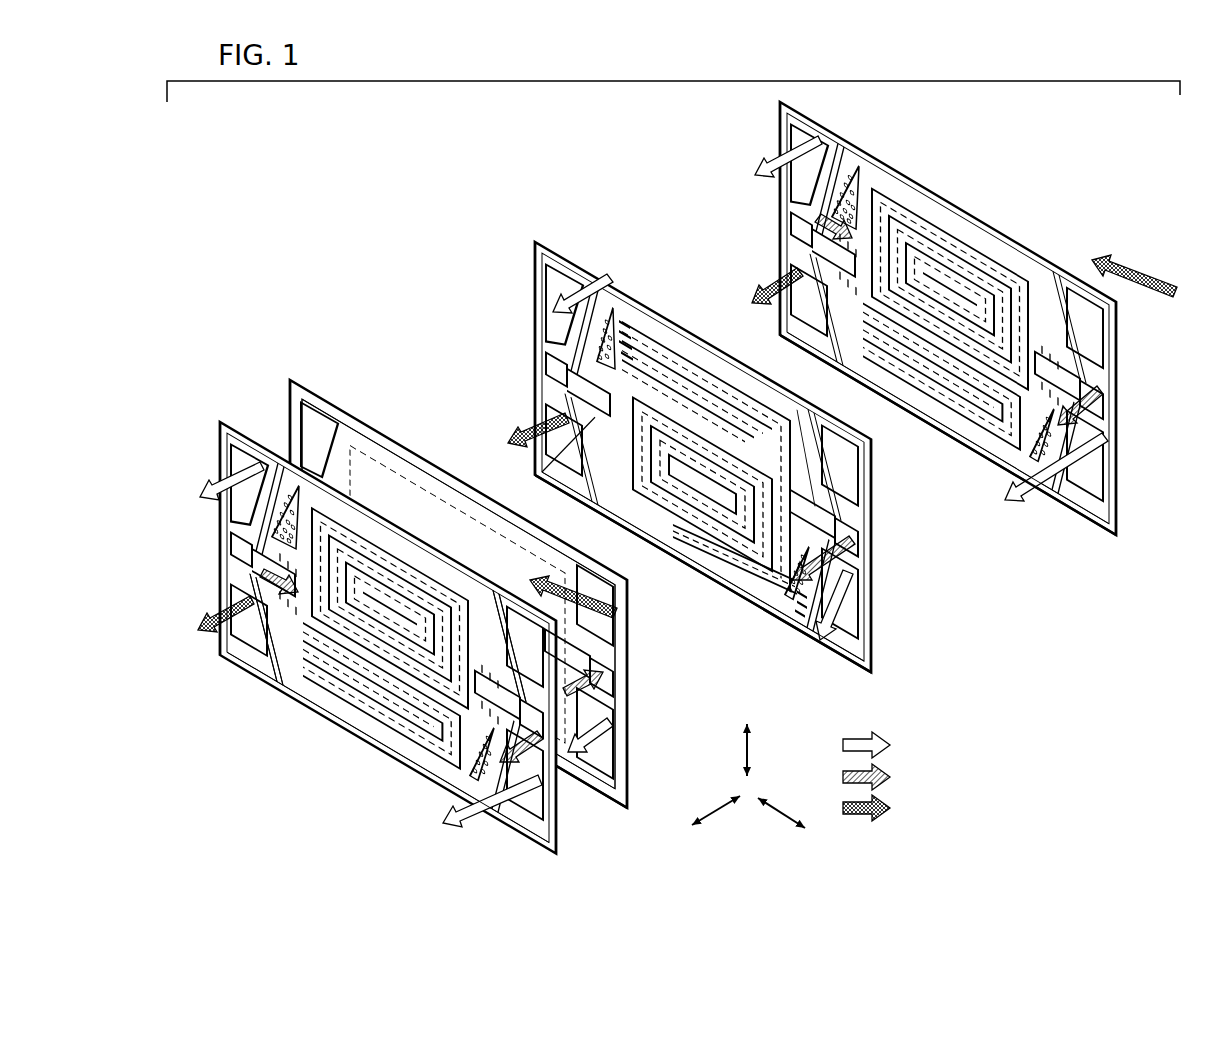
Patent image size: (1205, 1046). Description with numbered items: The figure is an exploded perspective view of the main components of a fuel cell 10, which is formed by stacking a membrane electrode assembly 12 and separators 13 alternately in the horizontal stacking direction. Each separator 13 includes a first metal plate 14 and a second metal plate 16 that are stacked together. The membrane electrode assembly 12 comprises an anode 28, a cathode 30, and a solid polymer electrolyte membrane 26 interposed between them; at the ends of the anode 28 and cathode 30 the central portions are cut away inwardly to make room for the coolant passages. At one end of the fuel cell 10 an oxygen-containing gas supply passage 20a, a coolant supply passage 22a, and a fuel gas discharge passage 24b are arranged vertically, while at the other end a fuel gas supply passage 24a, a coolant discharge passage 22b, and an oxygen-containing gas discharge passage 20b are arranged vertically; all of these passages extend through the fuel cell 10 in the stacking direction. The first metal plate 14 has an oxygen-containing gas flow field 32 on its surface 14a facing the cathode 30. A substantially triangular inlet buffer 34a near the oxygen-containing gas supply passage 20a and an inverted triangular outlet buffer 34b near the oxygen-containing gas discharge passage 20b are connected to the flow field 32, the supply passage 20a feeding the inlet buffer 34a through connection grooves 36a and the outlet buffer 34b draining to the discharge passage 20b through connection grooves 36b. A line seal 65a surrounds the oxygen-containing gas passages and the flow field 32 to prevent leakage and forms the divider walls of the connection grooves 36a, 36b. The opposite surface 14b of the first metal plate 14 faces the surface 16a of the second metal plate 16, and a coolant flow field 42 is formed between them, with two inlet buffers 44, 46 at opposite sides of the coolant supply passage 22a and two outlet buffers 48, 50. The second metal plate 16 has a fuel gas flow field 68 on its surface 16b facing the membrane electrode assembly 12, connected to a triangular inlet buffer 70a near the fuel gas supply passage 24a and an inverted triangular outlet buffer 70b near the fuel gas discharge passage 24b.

The fuel cell 10 is at (358, 240).
The membrane electrode assembly 12 is at (289, 379).
The separator 13 is at (736, 154).
The first metal plate 14 is at (649, 300).
The surface of the first metal plate 14a is at (803, 636).
The surface of the first metal plate 14b is at (867, 677).
The second metal plate 16 is at (217, 418).
The surface of the second metal plate 16a is at (272, 690).
The surface of the second metal plate 16b is at (1097, 530).
The oxygen-containing gas supply passage 20a is at (243, 462).
The oxygen-containing gas discharge passage 20b is at (540, 803).
The coolant supply passage 22a is at (242, 546).
The coolant discharge passage 22b is at (542, 721).
The fuel gas supply passage 24a is at (537, 656).
The fuel gas discharge passage 24b is at (242, 593).
The solid polymer electrolyte membrane 26 is at (622, 801).
The anode 28 is at (394, 482).
The cathode 30 is at (429, 498).
The oxygen-containing gas flow field 32 is at (671, 347).
The inlet buffer 34a is at (613, 307).
The outlet buffer 34b is at (816, 545).
The connection grooves 36a is at (592, 316).
The connection grooves 36b is at (801, 594).
The coolant flow field 42 is at (348, 700).
The inlet buffer 44 is at (585, 448).
The inlet buffer 46 is at (846, 173).
The outlet buffer 48 is at (1033, 446).
The outlet buffer 50 is at (817, 445).
The line seal 65a is at (713, 570).
The fuel gas flow field 68 is at (394, 714).
The inlet buffer 70a is at (492, 602).
The outlet buffer 70b is at (258, 674).